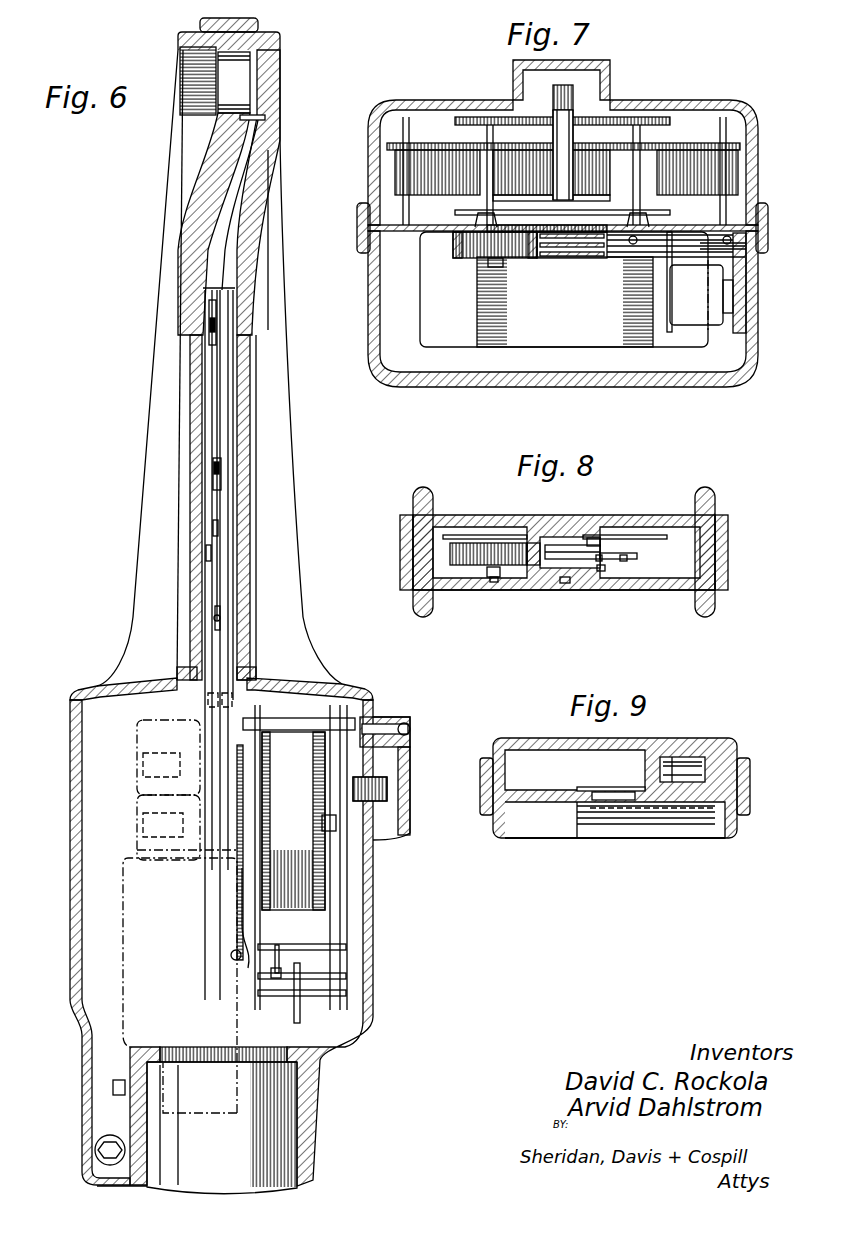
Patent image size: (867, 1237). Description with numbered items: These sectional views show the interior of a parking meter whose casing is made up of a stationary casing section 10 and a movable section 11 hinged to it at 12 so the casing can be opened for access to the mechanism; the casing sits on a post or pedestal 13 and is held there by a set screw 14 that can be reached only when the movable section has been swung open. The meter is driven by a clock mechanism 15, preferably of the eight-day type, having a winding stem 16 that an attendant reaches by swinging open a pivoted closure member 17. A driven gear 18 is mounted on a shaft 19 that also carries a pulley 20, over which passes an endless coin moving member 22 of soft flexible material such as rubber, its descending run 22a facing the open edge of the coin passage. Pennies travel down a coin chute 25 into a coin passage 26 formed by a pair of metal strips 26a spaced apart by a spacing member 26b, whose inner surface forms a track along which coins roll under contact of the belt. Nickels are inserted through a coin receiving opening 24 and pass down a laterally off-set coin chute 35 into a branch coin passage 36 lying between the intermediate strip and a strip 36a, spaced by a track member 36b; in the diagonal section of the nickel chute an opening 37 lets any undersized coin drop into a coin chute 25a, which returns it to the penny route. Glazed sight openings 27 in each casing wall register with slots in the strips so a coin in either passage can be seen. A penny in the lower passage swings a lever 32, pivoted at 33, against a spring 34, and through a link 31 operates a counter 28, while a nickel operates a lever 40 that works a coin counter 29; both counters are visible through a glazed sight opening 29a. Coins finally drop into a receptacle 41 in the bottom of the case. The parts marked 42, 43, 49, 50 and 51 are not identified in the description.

In FIG. 6, the stationary casing section 10 is at (290, 640).
In FIG. 7, the stationary casing section 10 is at (675, 100).
In FIG. 8, the stationary casing section 10 is at (724, 509).
In FIG. 9, the stationary casing section 10 is at (715, 744).
In FIG. 6, the movable casing section 11 is at (153, 607).
In FIG. 7, the movable casing section 11 is at (702, 393).
In FIG. 8, the movable casing section 11 is at (720, 592).
In FIG. 9, the movable casing section 11 is at (703, 830).
In FIG. 6, the hinge 12 is at (95, 1160).
In FIG. 6, the post or pedestal 13 is at (275, 1133).
In FIG. 6, the set screw 14 is at (113, 1087).
In FIG. 6, the clock mechanism 15 is at (360, 916).
In FIG. 7, the clock mechanism 15 is at (678, 175).
In FIG. 6, the winding stem 16 is at (387, 800).
In FIG. 7, the winding stem 16 is at (567, 90).
In FIG. 6, the pivoted closure member 17 is at (405, 765).
In FIG. 7, the pivoted closure member 17 is at (588, 63).
In FIG. 6, the driven gear 18 is at (237, 872).
In FIG. 7, the driven gear 18 is at (465, 222).
In FIG. 6, the shaft 19 is at (243, 790).
In FIG. 7, the shaft 19 is at (495, 262).
In FIG. 8, the shaft 19 is at (493, 577).
In FIG. 7, the pulley 20 is at (478, 246).
In FIG. 8, the pulley 20 is at (480, 570).
In FIG. 7, the endless coin moving member 22 is at (455, 243).
In FIG. 8, the endless coin moving member 22 is at (433, 548).
In FIG. 8, the run of coin moving member 22a is at (527, 543).
In FIG. 6, the coin receiving opening 24 is at (230, 90).
In FIG. 9, the coin chute 25 is at (600, 785).
In FIG. 6, the coin chute 25a is at (247, 175).
In FIG. 9, the coin chute 25a is at (665, 806).
In FIG. 6, the coin passage 26 is at (233, 283).
In FIG. 7, the coin passage 26 is at (563, 237).
In FIG. 8, the coin passage 26 is at (553, 547).
In FIG. 9, the coin passage 26 is at (618, 792).
In FIG. 6, the metal strips 26a is at (217, 417).
In FIG. 8, the metal strips 26a is at (583, 550).
In FIG. 6, the spacing member 26b is at (221, 442).
In FIG. 8, the spacing member 26b is at (600, 540).
In FIG. 6, the glazed sight openings 27 is at (245, 365).
In FIG. 8, the glazed sight openings 27 is at (570, 537).
In FIG. 6, the counter 28 is at (140, 820).
In FIG. 6, the coin counter 29 is at (140, 750).
In FIG. 7, the coin counter 29 is at (715, 288).
In FIG. 7, the glazed sight opening 29a is at (748, 307).
In FIG. 7, the link 31 is at (750, 240).
In FIG. 7, the lever 32 is at (720, 228).
In FIG. 7, the pivot 33 is at (672, 235).
In FIG. 7, the spring 34 is at (628, 237).
In FIG. 6, the coin chute 35 is at (253, 120).
In FIG. 9, the coin chute 35 is at (702, 757).
In FIG. 6, the branch coin passage 36 is at (205, 287).
In FIG. 7, the branch coin passage 36 is at (573, 252).
In FIG. 8, the branch coin passage 36 is at (563, 583).
In FIG. 9, the branch coin passage 36 is at (606, 808).
In FIG. 6, the strip 36a is at (208, 550).
In FIG. 8, the strip 36a is at (605, 571).
In FIG. 6, the spacing or track member 36b is at (214, 528).
In FIG. 8, the spacing or track member 36b is at (602, 558).
In FIG. 6, the opening 37 is at (250, 147).
In FIG. 9, the opening 37 is at (673, 767).
In FIG. 7, the lever 40 is at (658, 242).
In FIG. 6, the receptacle 41 is at (125, 977).
In FIG. 7, the receptacle 41 is at (582, 340).
In FIG. 6, the contact 42 is at (217, 347).
In FIG. 6, the contact 43 is at (240, 317).
In FIG. 6, the stop 49 is at (218, 468).
In FIG. 8, the stop 49 is at (627, 558).
In FIG. 6, the stop 50 is at (227, 484).
In FIG. 6, the pin 51 is at (218, 618).